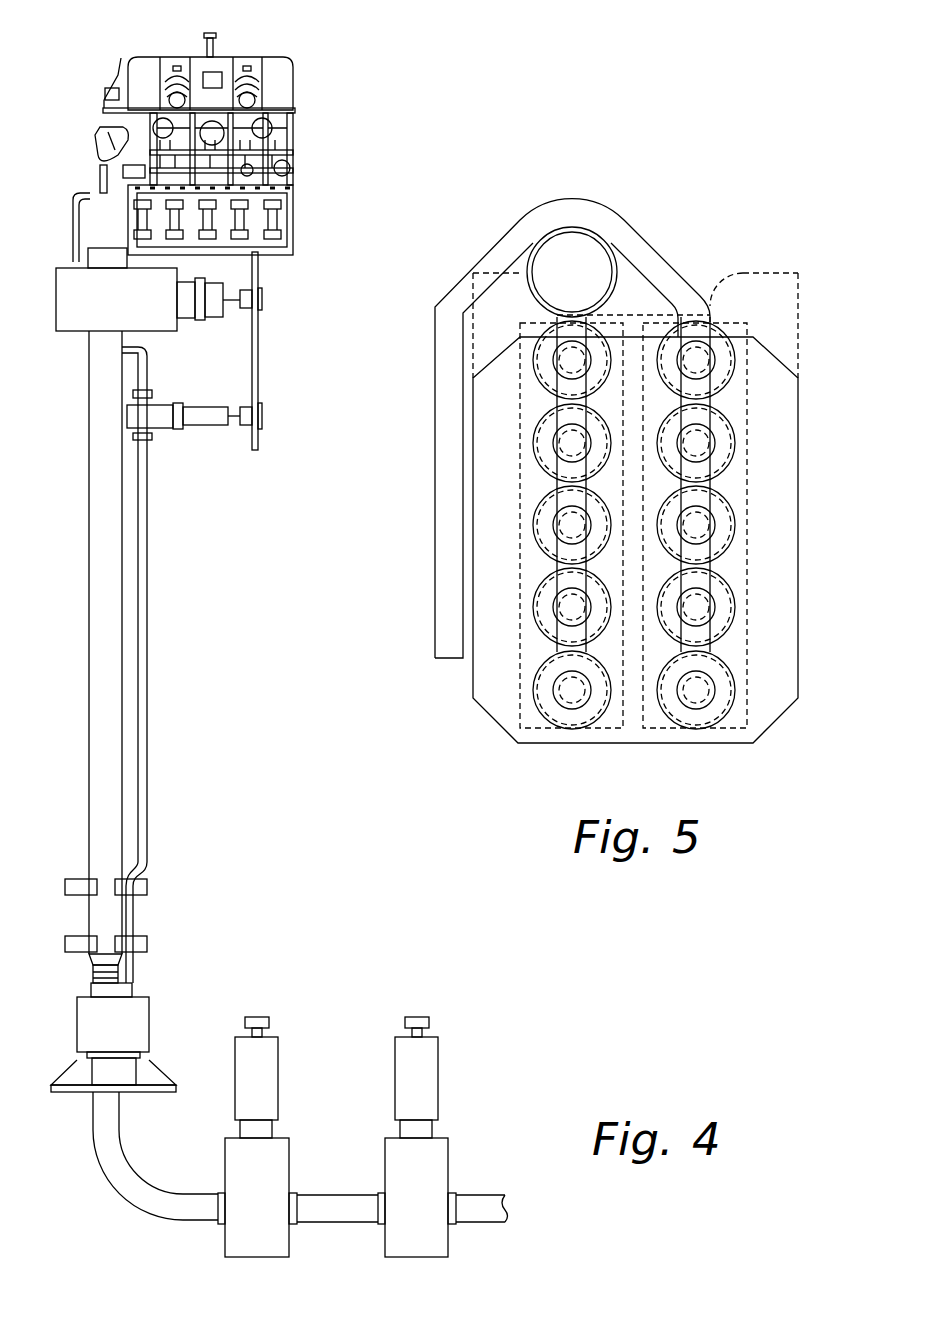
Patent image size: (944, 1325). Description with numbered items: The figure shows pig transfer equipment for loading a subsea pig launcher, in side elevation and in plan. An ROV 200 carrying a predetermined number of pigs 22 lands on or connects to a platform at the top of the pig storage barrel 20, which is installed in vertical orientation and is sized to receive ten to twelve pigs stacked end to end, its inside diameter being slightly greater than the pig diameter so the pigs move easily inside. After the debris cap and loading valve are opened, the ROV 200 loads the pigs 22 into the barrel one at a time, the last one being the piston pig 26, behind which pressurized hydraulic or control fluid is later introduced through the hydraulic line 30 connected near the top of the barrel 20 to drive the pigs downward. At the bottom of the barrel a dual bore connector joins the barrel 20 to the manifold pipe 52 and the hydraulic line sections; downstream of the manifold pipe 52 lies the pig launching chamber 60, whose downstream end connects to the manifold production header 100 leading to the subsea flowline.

In FIG. 4, the pig storage barrel 20 is at (89, 537).
In FIG. 5, the pig storage barrel 20 is at (571, 253).
In FIG. 4, the pigs 22 is at (273, 223).
In FIG. 5, the pigs 22 is at (572, 607).
In FIG. 5, the piston pig 26 is at (697, 690).
In FIG. 4, the hydraulic line 30 is at (147, 637).
In FIG. 4, the manifold pipe 52 is at (125, 1183).
In FIG. 4, the pig launching chamber 60 is at (340, 1223).
In FIG. 4, the manifold production header 100 is at (477, 1223).
In FIG. 4, the ROV 200 is at (250, 50).
In FIG. 5, the ROV 200 is at (798, 530).